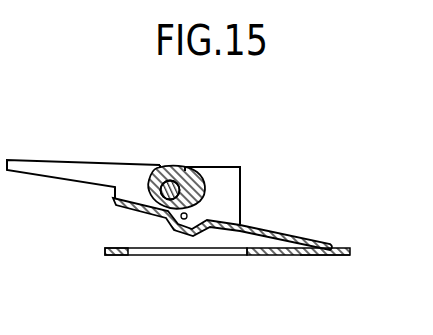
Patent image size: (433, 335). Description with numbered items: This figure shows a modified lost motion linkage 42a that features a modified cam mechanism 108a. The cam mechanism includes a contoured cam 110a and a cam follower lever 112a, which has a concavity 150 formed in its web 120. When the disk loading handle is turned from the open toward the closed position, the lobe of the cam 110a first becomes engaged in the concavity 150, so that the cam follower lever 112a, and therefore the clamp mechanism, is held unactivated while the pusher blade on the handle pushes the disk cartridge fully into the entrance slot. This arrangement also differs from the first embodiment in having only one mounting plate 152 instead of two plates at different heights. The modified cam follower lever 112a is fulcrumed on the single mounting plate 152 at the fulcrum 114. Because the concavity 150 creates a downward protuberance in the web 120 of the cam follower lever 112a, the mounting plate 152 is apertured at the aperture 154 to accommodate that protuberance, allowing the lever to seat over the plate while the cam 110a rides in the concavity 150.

The modified lost motion linkage 42a is at (91, 154).
The cam 110a is at (156, 172).
The modified cam mechanism 108a is at (177, 160).
The cam follower lever 112a is at (264, 227).
The concavity 150 is at (176, 225).
The web 120 is at (308, 247).
The aperture 154 is at (129, 257).
The mounting plate 152 is at (251, 257).
The fulcrum 114 is at (308, 258).